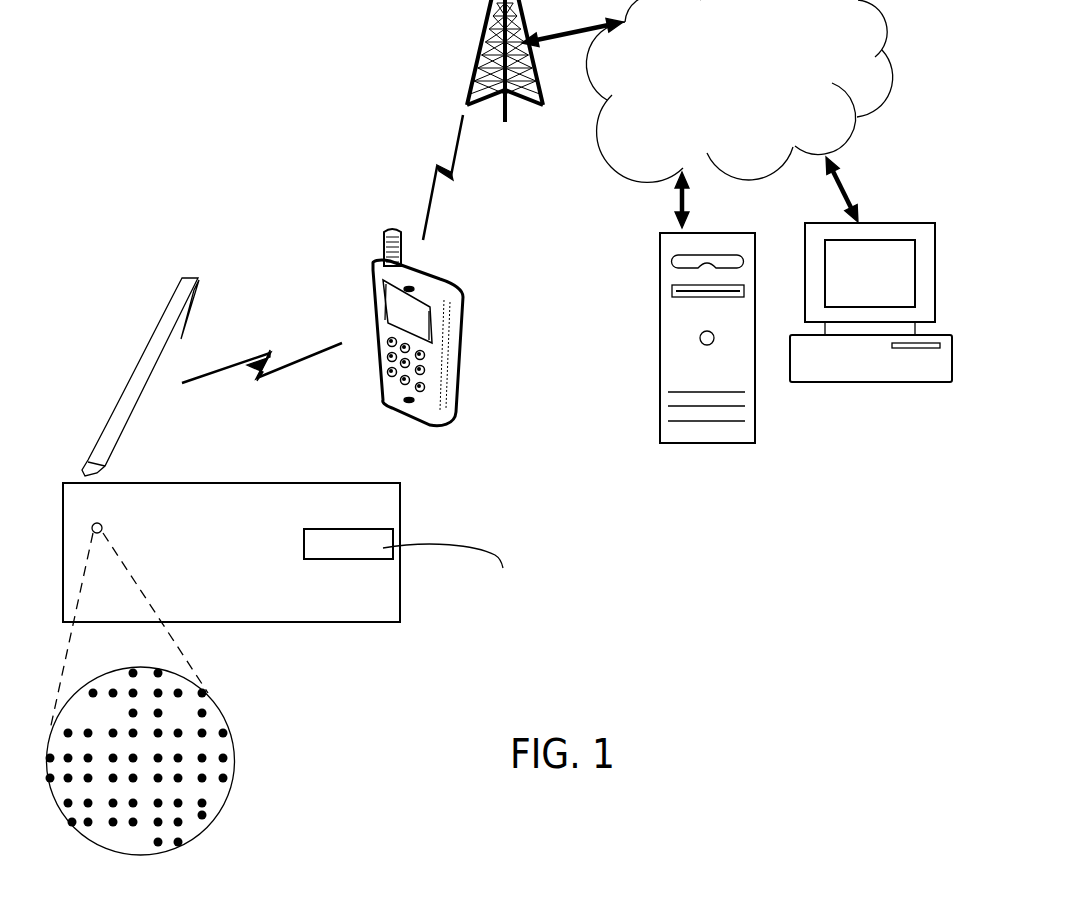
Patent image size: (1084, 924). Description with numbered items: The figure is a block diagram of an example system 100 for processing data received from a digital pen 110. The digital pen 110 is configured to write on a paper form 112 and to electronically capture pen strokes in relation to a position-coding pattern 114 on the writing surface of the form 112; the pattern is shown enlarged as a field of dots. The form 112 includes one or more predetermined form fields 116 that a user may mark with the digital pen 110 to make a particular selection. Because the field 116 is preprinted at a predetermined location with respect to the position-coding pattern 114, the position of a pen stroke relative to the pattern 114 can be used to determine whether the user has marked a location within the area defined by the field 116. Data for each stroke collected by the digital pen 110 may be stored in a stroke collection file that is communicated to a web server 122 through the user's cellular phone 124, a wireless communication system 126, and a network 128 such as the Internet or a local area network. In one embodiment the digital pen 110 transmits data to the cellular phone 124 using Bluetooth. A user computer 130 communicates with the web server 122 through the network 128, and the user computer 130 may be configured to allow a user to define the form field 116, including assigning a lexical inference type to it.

The system 100 is at (221, 55).
The digital pen 110 is at (183, 275).
The paper form 112 is at (305, 622).
The position-coding pattern 114 is at (235, 768).
The form field 116 is at (343, 528).
The web server 122 is at (660, 363).
The cellular phone 124 is at (440, 277).
The wireless communication system 126 is at (485, 48).
The network 128 is at (722, 119).
The user computer 130 is at (920, 222).